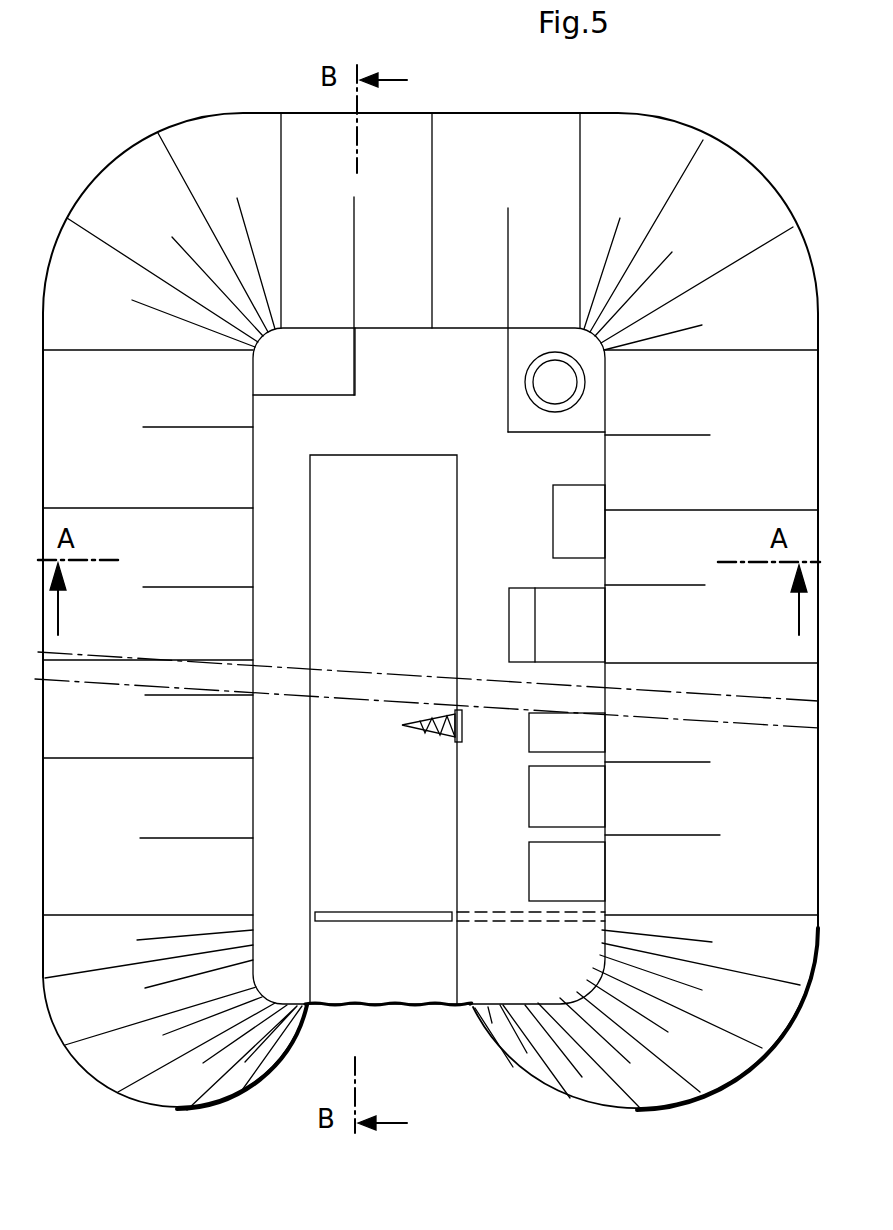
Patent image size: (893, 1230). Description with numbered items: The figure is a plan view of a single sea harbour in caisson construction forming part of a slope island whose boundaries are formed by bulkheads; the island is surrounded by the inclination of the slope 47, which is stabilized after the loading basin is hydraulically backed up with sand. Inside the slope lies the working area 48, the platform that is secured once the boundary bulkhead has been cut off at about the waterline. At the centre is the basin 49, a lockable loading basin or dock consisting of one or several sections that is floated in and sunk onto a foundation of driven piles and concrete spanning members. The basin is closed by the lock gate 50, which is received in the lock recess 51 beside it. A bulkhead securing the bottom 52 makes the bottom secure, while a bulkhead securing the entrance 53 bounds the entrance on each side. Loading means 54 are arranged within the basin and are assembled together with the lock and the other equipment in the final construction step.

The inclination of the slope 47 is at (518, 170).
The working area 48 is at (592, 463).
The basin 49 is at (447, 540).
The lock gate 50 is at (350, 911).
The lock recess 51 is at (493, 911).
The bulkhead securing the bottom 52 is at (345, 1003).
The bulkhead securing the entrance 53 is at (297, 1040).
The loading means 54 is at (415, 730).